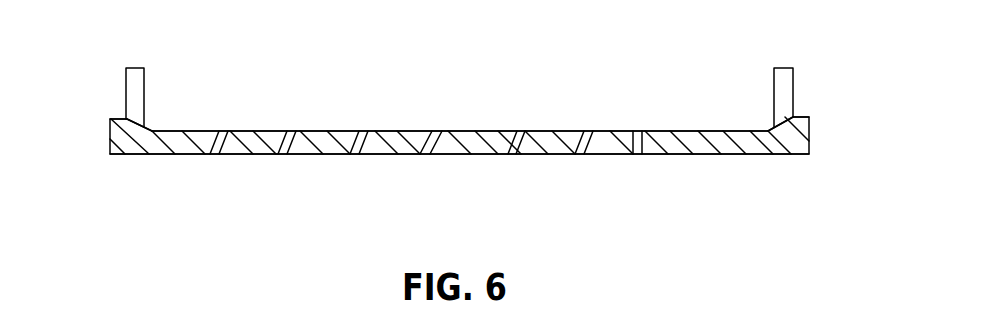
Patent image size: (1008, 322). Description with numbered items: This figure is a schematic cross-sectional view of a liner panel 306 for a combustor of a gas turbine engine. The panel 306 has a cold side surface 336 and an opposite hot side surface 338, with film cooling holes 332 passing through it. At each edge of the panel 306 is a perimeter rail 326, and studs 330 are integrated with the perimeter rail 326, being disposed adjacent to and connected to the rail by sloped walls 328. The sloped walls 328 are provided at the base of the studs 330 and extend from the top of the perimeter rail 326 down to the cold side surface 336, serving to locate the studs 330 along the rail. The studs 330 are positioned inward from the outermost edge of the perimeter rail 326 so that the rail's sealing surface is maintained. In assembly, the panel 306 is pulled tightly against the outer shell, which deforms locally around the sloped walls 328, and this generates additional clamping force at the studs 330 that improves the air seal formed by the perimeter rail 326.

The panel 306 is at (383, 155).
The perimeter rail 326 is at (122, 118).
The sloped walls 328 is at (152, 131).
The studs 330 is at (135, 68).
The film cooling holes 332 is at (352, 154).
The cold side surface 336 is at (498, 131).
The hot side surface 338 is at (568, 172).